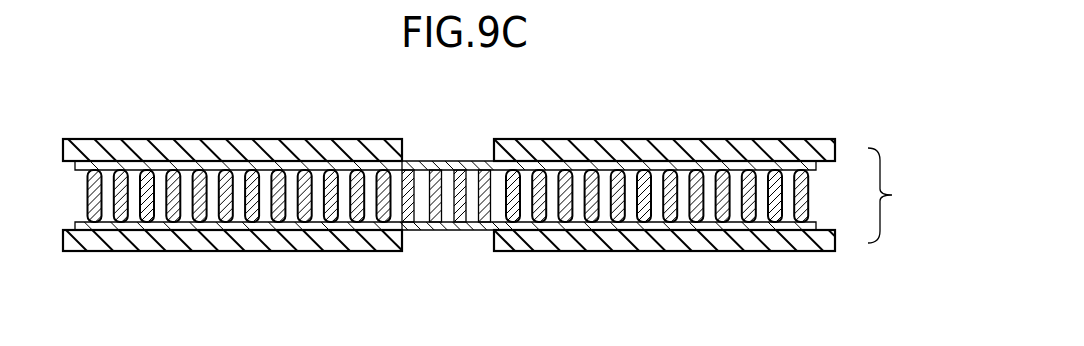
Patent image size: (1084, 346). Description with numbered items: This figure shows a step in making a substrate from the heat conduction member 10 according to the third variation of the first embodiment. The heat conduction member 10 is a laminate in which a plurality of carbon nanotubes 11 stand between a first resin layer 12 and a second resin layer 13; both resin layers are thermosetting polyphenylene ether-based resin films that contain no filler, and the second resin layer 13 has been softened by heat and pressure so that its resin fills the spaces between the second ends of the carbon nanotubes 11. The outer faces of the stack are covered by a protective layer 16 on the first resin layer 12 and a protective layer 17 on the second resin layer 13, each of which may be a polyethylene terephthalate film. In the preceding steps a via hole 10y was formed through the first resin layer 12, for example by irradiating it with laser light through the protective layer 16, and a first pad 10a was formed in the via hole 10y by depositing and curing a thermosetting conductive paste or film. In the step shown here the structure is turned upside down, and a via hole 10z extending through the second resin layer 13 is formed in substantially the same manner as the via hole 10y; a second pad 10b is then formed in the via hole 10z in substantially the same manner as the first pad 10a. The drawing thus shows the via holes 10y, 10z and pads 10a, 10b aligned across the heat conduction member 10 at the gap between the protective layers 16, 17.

The heat conduction member 10 is at (892, 195).
The first pad 10a is at (460, 223).
The second pad 10b is at (448, 168).
The via hole 10y is at (400, 223).
The via hole 10z is at (403, 161).
The carbon nanotubes 11 is at (801, 194).
The first resin layer 12 is at (811, 225).
The second resin layer 13 is at (812, 167).
The protective layer 16 is at (817, 237).
The protective layer 17 is at (817, 153).